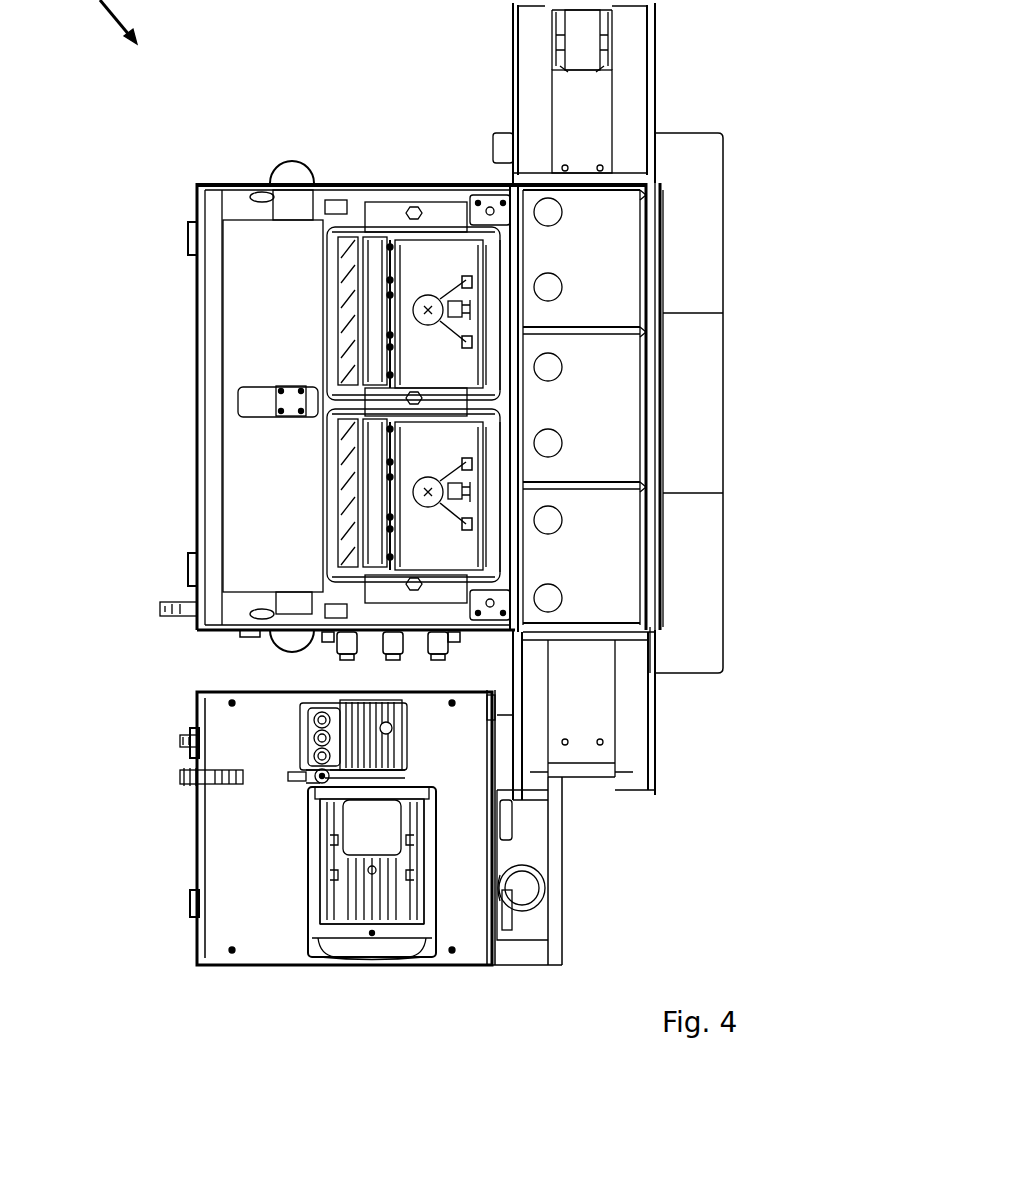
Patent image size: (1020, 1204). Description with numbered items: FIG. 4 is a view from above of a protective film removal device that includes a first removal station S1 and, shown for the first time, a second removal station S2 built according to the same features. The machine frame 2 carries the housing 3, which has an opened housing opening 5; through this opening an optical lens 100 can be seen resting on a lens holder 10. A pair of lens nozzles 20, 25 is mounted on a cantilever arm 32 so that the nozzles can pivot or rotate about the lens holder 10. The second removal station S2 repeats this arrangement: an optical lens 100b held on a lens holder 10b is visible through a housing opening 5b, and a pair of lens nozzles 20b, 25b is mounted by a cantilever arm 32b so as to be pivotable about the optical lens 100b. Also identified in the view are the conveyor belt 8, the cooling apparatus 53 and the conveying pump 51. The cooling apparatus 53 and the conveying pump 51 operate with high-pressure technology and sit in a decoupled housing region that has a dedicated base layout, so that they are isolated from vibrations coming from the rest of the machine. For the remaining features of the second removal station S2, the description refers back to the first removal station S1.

The machine frame 2 is at (195, 302).
The housing 3 is at (393, 318).
The housing opening 5 is at (393, 350).
The conveyor belt 8 is at (583, 117).
The lens holder 10 is at (407, 303).
The lens holder 10b is at (273, 490).
The lens nozzle 20 is at (468, 286).
The lens nozzle 20b is at (627, 446).
The lens nozzle 25 is at (474, 331).
The lens nozzle 25b is at (623, 512).
The cantilever arm 32 is at (472, 301).
The cantilever arm 32b is at (621, 461).
The conveying pump 51 is at (415, 858).
The cooling apparatus 53 is at (522, 888).
The optical lens 100 is at (430, 310).
The optical lens 100b is at (614, 431).
The housing opening 5b is at (230, 493).
The first removal station S1 is at (430, 263).
The second removal station S2 is at (438, 469).